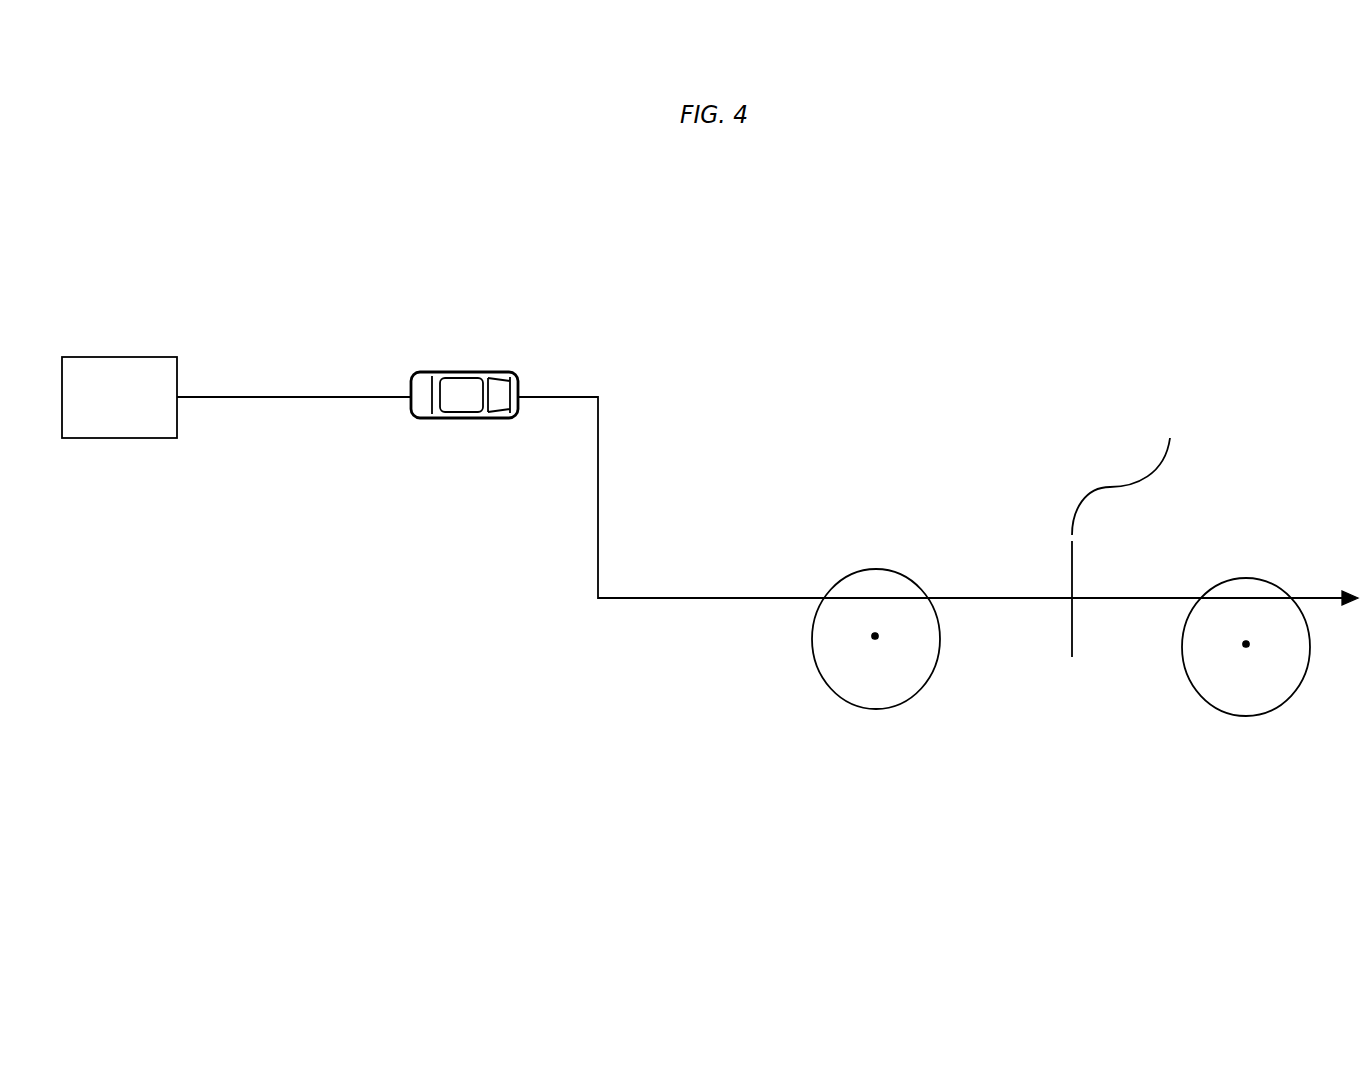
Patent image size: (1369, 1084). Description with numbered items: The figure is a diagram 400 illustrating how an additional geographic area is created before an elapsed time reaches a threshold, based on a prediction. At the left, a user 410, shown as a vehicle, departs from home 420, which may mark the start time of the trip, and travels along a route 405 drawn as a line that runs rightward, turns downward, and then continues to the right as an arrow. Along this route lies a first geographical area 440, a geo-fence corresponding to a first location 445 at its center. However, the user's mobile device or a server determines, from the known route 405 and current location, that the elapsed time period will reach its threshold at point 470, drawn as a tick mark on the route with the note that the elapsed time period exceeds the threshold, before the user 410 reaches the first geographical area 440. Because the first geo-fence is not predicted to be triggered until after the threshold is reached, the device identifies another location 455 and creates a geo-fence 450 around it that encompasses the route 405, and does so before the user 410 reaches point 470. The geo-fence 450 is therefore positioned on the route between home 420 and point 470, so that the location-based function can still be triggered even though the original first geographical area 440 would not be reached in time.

The diagram 400 is at (348, 877).
The route 405 is at (598, 397).
The user 410 is at (470, 372).
The home 420 is at (120, 438).
The first geographical area 440 is at (1273, 710).
The first location 445 is at (1246, 636).
The geo-fence 450 is at (897, 571).
The location 455 is at (875, 628).
The point 470 is at (1072, 623).